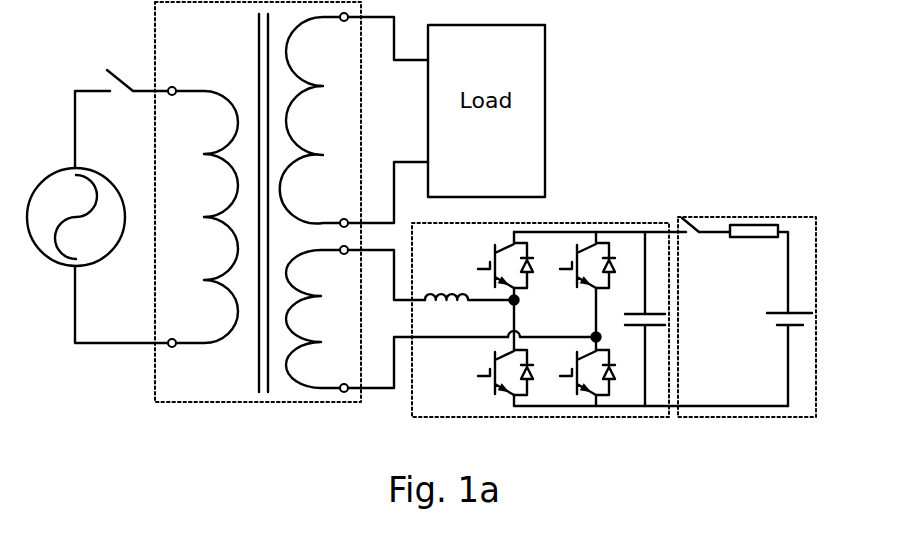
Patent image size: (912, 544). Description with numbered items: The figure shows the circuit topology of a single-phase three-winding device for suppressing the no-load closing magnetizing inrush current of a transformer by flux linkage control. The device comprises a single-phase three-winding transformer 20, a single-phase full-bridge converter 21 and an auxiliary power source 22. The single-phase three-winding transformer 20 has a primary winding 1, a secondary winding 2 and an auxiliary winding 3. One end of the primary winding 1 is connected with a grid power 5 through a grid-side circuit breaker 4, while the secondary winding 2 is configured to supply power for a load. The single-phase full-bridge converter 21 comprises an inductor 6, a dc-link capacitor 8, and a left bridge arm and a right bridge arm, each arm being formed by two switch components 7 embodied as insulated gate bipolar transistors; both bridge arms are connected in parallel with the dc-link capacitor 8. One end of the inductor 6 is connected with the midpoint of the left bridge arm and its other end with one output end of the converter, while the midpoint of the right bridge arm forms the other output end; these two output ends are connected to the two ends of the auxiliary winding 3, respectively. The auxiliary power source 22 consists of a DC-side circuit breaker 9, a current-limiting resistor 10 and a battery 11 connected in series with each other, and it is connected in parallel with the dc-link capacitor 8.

The primary winding 1 is at (203, 217).
The secondary winding 2 is at (354, 120).
The auxiliary winding 3 is at (397, 319).
The grid-side circuit breaker 4 is at (137, 76).
The grid power 5 is at (97, 217).
The inductor 6 is at (469, 285).
The switch component 7 is at (555, 313).
The dc-link capacitor 8 is at (645, 319).
The DC-side circuit breaker 9 is at (706, 244).
The current-limiting resistor 10 is at (759, 269).
The battery 11 is at (786, 346).
The single-phase three-winding transformer 20 is at (138, 42).
The single-phase full-bridge converter 21 is at (556, 208).
The auxiliary power source 22 is at (745, 203).